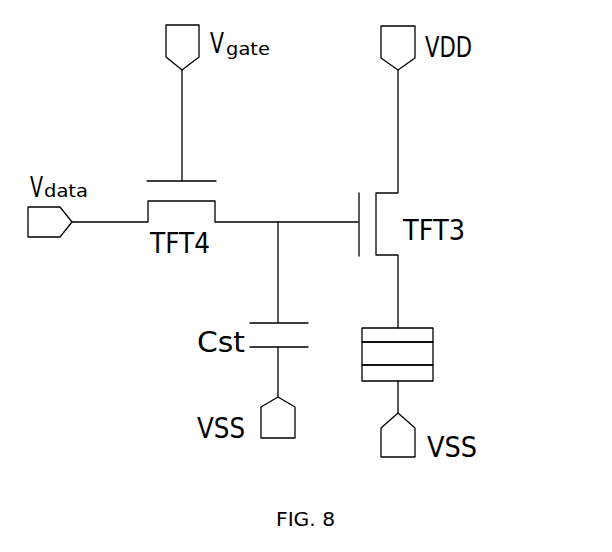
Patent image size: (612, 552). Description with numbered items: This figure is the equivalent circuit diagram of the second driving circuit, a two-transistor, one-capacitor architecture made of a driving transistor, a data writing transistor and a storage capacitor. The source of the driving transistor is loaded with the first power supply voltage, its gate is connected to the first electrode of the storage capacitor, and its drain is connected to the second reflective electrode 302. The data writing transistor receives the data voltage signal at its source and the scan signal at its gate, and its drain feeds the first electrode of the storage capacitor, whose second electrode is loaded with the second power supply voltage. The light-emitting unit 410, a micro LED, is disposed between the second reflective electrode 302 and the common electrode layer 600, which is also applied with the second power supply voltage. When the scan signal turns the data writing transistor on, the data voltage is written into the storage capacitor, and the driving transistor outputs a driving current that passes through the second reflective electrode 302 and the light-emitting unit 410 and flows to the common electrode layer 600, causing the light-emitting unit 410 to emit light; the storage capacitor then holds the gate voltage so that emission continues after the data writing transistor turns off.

The second reflective electrode 302 is at (433, 336).
The light-emitting unit 410 is at (433, 357).
The common electrode layer 600 is at (433, 373).